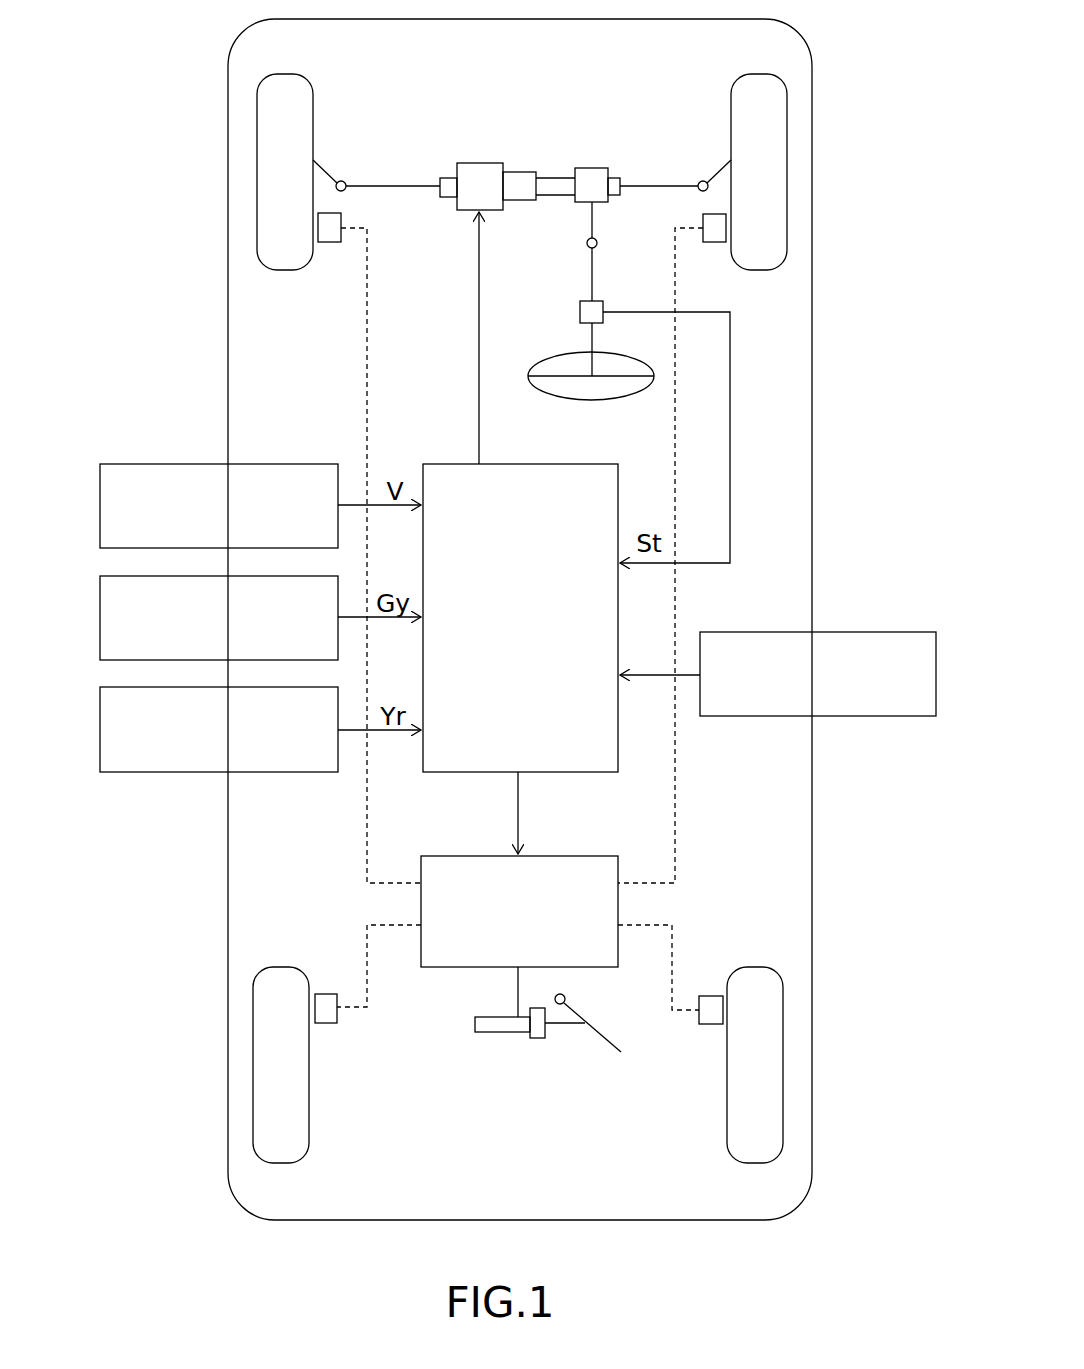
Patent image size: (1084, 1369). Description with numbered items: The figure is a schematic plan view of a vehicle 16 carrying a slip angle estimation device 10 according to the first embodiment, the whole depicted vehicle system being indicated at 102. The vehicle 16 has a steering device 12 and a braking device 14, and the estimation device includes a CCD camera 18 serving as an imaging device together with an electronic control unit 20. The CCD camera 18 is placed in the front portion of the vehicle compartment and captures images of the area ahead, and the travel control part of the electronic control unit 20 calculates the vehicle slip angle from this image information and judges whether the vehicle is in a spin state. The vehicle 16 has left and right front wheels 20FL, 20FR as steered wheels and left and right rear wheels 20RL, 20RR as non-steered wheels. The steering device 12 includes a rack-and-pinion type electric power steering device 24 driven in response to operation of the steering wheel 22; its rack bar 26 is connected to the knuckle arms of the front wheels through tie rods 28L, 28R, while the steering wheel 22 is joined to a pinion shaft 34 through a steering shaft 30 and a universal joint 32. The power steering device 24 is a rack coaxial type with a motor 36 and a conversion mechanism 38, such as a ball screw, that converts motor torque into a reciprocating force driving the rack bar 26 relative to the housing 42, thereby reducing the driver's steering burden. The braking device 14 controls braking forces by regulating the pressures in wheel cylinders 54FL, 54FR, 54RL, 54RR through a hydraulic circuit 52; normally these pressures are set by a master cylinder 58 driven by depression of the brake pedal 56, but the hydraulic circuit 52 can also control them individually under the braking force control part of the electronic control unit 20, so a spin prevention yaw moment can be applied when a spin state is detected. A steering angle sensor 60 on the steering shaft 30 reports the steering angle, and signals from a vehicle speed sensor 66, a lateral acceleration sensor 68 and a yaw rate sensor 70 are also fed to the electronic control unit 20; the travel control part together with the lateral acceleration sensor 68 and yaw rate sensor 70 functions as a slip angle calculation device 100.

The slip angle estimation device 10 is at (215, 405).
The steering device 12 is at (494, 304).
The braking device 14 is at (522, 655).
The vehicle 16 is at (501, 619).
The CCD camera 18 is at (868, 632).
The electronic control unit 20 is at (520, 618).
The left front wheel 20FL is at (257, 183).
The right front wheel 20FR is at (787, 186).
The left rear wheel 20RL is at (253, 1072).
The right rear wheel 20RR is at (783, 1076).
The steering wheel 22 is at (576, 396).
The electric power steering device 24 is at (512, 190).
The rack bar 26 is at (396, 186).
The left tie rod 28L is at (322, 165).
The right tie rod 28R is at (720, 166).
The steering shaft 30 is at (592, 273).
The universal joint 32 is at (586, 243).
The pinion shaft 34 is at (594, 218).
The motor 36 is at (483, 163).
The conversion mechanism 38 is at (515, 201).
The housing 42 is at (452, 198).
The hydraulic circuit 52 is at (519, 911).
The left front wheel cylinder 54FL is at (330, 242).
The right front wheel cylinder 54FR is at (718, 242).
The left rear wheel cylinder 54RL is at (325, 994).
The right rear wheel cylinder 54RR is at (712, 996).
The brake pedal 56 is at (590, 1023).
The master cylinder 58 is at (497, 1017).
The steering angle sensor 60 is at (580, 312).
The vehicle speed sensor 66 is at (100, 516).
The lateral acceleration sensor 68 is at (100, 628).
The yaw rate sensor 70 is at (100, 739).
The slip angle calculation device 100 is at (352, 800).
The vehicle 102 is at (537, 619).